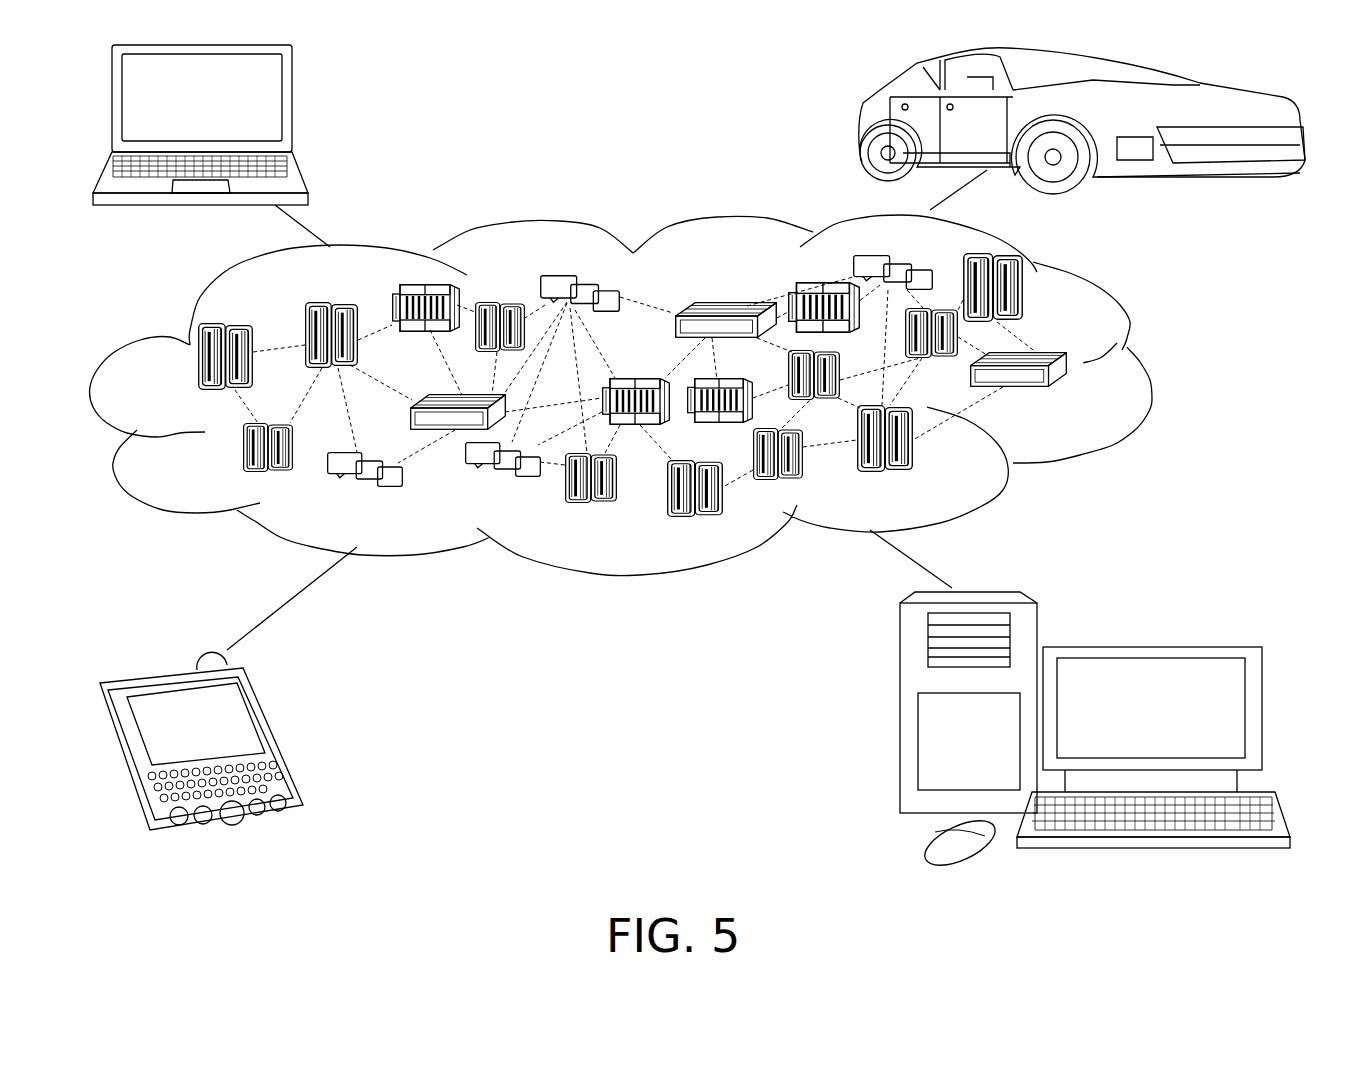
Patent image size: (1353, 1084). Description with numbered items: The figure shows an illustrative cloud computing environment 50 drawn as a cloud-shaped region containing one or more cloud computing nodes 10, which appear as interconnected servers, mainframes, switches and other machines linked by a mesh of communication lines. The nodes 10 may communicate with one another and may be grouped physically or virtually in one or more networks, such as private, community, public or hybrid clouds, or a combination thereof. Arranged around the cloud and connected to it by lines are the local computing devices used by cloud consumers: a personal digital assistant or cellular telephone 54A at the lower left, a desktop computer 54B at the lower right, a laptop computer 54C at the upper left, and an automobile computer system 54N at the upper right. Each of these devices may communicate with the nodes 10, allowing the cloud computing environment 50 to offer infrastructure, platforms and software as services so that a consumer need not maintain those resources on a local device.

The cloud computing node 10 is at (1095, 398).
The cloud computing environment 50 is at (1148, 367).
The personal digital assistant or cellular telephone 54A is at (272, 740).
The desktop computer 54B is at (1148, 647).
The laptop computer 54C is at (292, 107).
The automobile computer system 54N is at (860, 121).